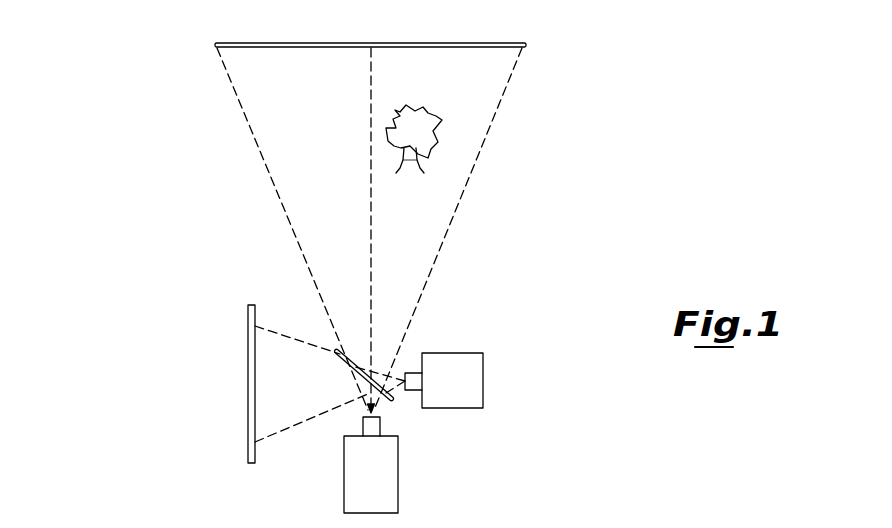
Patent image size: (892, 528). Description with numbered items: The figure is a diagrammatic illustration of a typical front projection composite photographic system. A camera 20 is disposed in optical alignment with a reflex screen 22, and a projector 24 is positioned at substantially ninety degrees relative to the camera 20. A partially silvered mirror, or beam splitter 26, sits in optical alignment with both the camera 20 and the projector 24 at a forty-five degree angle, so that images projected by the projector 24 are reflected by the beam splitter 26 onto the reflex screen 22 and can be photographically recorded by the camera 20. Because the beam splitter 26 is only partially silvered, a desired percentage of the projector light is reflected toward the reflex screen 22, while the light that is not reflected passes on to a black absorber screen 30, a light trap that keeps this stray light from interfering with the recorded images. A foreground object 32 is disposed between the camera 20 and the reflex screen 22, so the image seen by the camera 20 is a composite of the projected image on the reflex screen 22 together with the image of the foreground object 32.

The camera 20 is at (398, 478).
The reflex screen 22 is at (508, 43).
The projector 24 is at (483, 390).
The beam splitter 26 is at (337, 352).
The black absorber screen 30 is at (247, 368).
The foreground object 32 is at (443, 120).